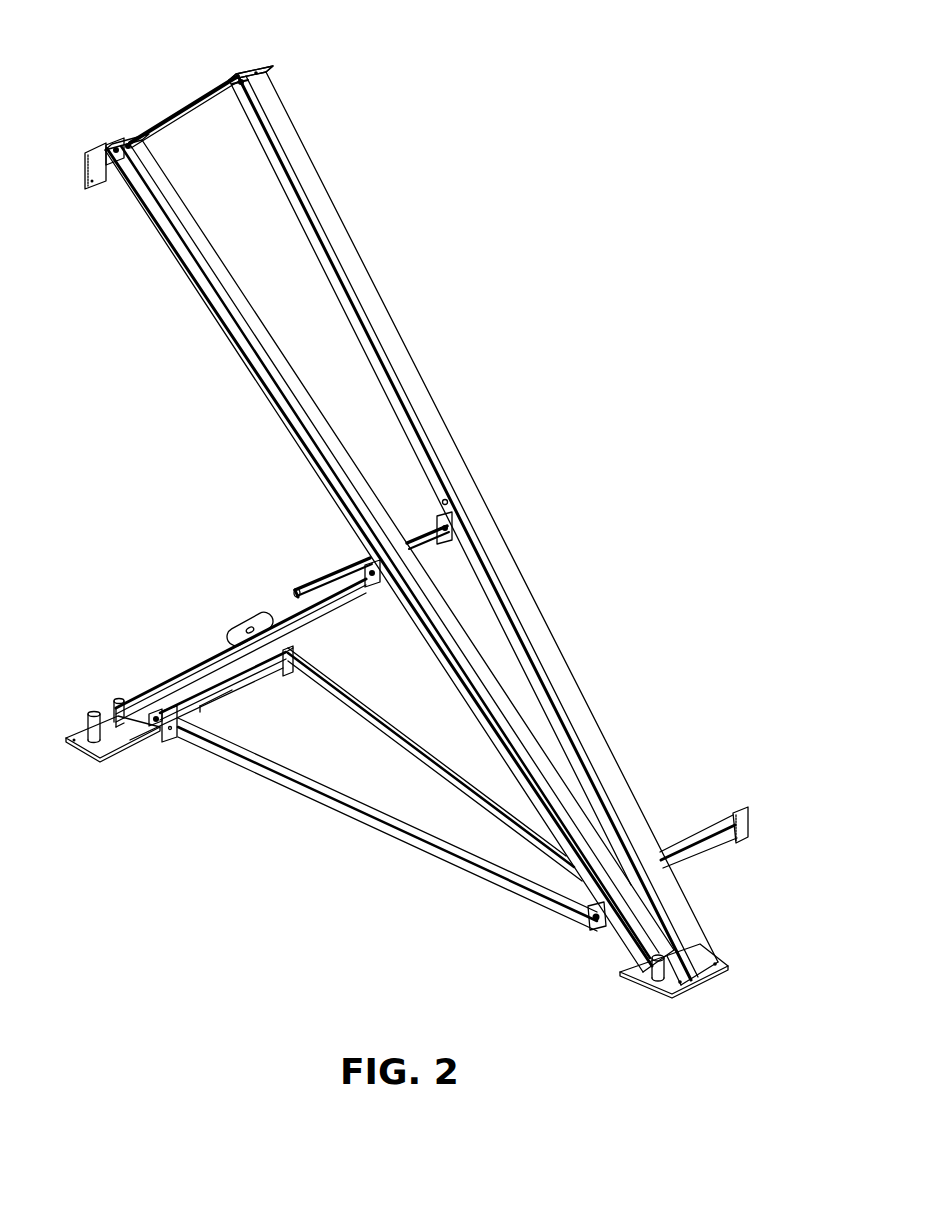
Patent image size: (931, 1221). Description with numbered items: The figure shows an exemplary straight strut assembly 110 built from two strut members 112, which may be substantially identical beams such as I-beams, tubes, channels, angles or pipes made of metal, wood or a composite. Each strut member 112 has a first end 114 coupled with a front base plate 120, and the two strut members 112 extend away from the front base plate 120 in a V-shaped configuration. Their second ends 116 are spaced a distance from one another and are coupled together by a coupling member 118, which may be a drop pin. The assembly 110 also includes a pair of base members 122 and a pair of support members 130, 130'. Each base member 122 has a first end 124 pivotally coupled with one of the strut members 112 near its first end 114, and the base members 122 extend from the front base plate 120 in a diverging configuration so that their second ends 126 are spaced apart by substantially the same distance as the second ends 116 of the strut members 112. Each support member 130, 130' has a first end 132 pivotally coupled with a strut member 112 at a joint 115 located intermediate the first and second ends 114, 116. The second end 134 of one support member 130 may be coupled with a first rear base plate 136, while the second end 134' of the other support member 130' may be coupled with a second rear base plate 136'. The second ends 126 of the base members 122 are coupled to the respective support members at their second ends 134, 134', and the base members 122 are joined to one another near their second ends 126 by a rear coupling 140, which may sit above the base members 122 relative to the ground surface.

The straight strut assembly 110 is at (569, 344).
The strut member 112 is at (322, 185).
The first end 114 is at (724, 944).
The joint 115 is at (437, 516).
The second end 116 is at (288, 69).
The coupling member 118 is at (183, 111).
The front base plate 120 is at (642, 985).
The base member 122 is at (490, 803).
The first end 124 is at (568, 932).
The second end 126 is at (150, 750).
The support member 130 is at (241, 618).
The support member 130' is at (435, 559).
The first end 132 is at (331, 624).
The second end 134 is at (106, 656).
The second end 134' is at (256, 551).
The first rear base plate 136 is at (92, 696).
The second rear base plate 136' is at (220, 606).
The rear coupling 140 is at (216, 703).